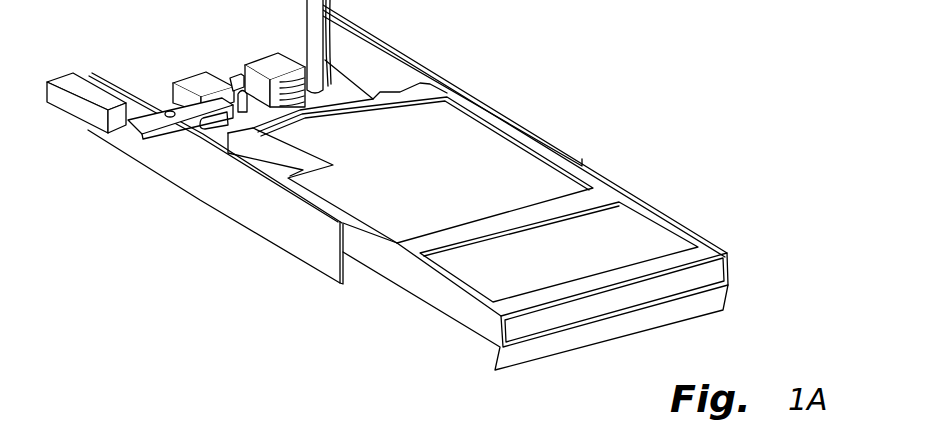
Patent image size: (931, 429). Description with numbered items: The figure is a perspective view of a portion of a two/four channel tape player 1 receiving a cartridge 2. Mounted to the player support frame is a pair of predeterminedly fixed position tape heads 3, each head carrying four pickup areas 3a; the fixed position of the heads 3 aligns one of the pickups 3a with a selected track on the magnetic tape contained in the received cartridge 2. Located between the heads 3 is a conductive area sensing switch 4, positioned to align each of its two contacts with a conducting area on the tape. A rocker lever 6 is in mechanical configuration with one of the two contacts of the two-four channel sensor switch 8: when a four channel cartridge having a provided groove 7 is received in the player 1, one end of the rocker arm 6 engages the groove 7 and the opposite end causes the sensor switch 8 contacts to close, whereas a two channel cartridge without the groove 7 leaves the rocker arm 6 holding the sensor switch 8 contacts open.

The tape player 1 is at (428, 62).
The cartridge 2 is at (622, 195).
The tape heads 3 is at (200, 80).
The pickup areas 3a is at (315, 53).
The conductive area sensing switch 4 is at (240, 77).
The rocker lever 6 is at (180, 110).
The groove 7 is at (272, 147).
The sensor switch 8 is at (70, 80).